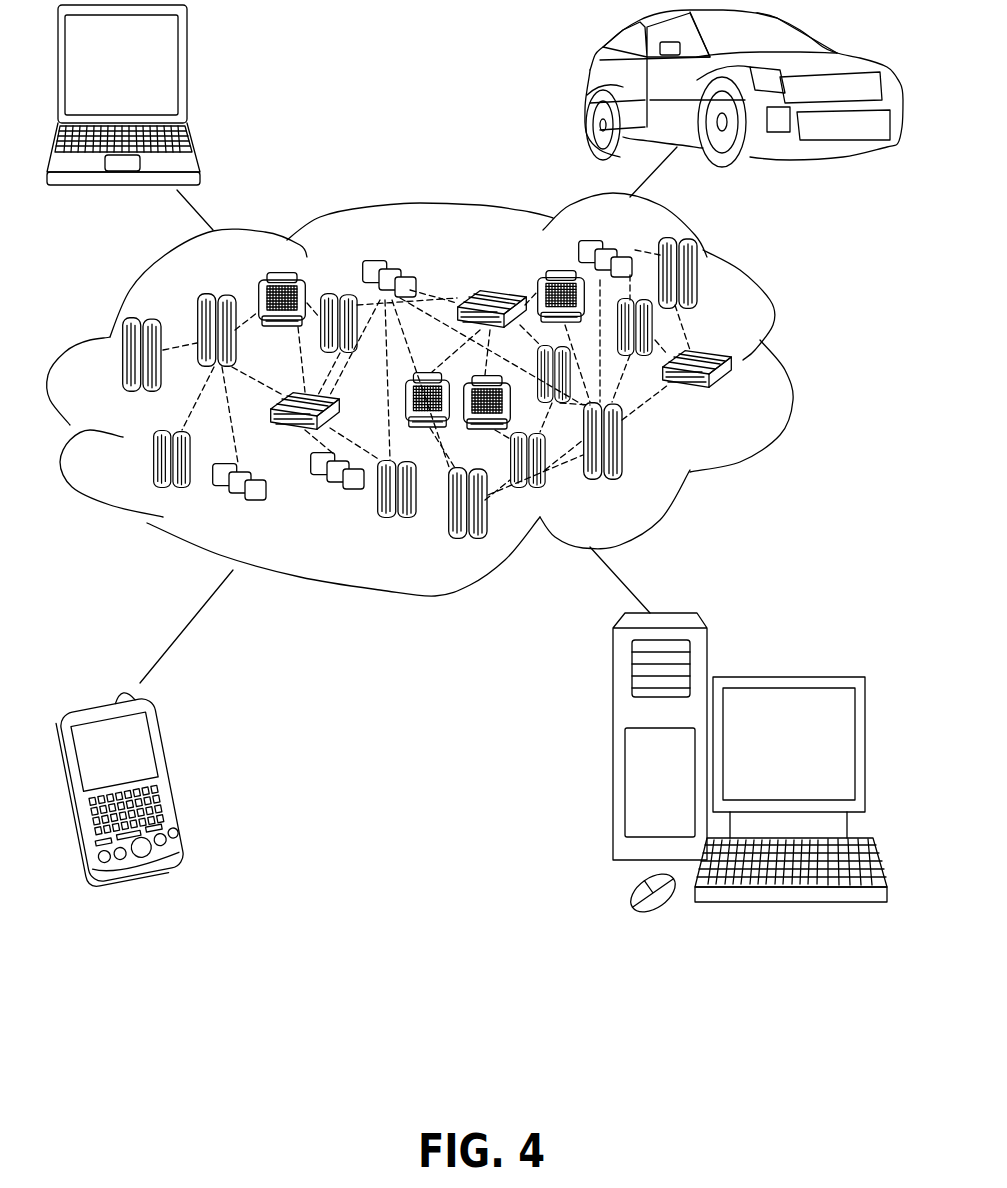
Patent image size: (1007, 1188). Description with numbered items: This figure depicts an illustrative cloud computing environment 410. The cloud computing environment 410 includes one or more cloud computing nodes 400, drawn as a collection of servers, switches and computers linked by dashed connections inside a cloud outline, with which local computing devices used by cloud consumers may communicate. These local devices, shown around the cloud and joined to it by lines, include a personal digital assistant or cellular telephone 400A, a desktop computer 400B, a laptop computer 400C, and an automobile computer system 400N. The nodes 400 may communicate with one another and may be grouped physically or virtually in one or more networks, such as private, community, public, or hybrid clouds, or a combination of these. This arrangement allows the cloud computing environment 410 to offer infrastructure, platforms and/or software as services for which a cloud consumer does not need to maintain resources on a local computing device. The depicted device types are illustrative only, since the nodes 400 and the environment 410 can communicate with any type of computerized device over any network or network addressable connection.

The cloud computing node 400 is at (451, 394).
The cloud computing environment 410 is at (790, 363).
The personal digital assistant or cellular telephone 400A is at (177, 777).
The desktop computer 400B is at (785, 672).
The laptop computer 400C is at (188, 72).
The automobile computer system 400N is at (583, 90).